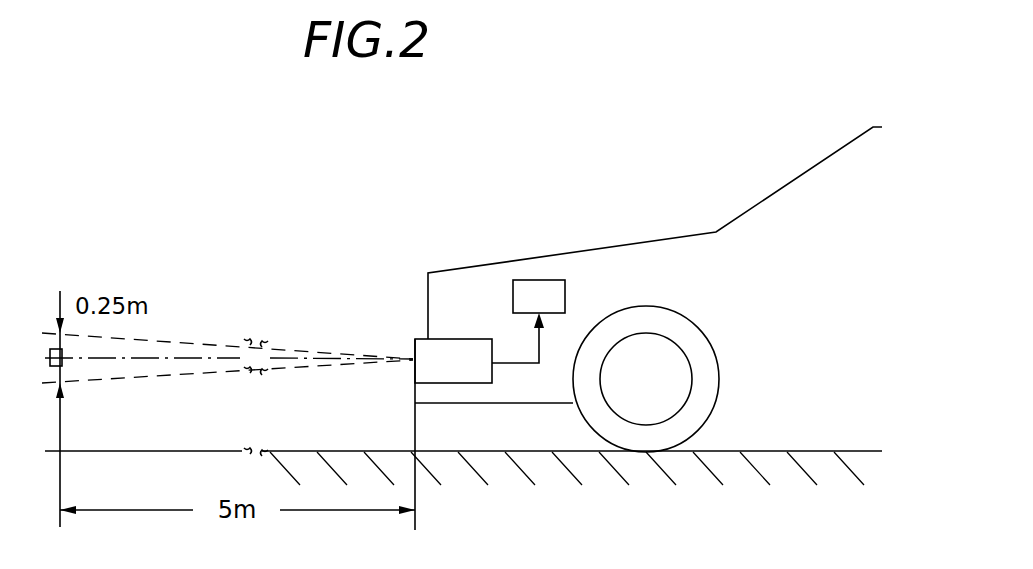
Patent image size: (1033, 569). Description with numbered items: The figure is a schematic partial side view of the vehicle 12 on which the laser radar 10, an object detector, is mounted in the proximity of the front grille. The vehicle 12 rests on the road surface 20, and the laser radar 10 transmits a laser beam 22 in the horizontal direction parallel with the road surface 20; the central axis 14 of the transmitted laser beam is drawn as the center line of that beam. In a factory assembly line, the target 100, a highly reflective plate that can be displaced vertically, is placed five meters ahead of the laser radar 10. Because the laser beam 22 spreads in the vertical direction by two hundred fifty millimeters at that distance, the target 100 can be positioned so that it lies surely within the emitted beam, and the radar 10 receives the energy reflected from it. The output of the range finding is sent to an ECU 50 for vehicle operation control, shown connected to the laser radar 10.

The laser radar 10 is at (462, 340).
The vehicle 12 is at (690, 232).
The central axis of the laser beam 14 is at (214, 350).
The road surface 20 is at (330, 450).
The laser beam 22 is at (175, 342).
The ECU (Electronic Control Unit) 50 is at (548, 280).
The target 100 is at (63, 364).